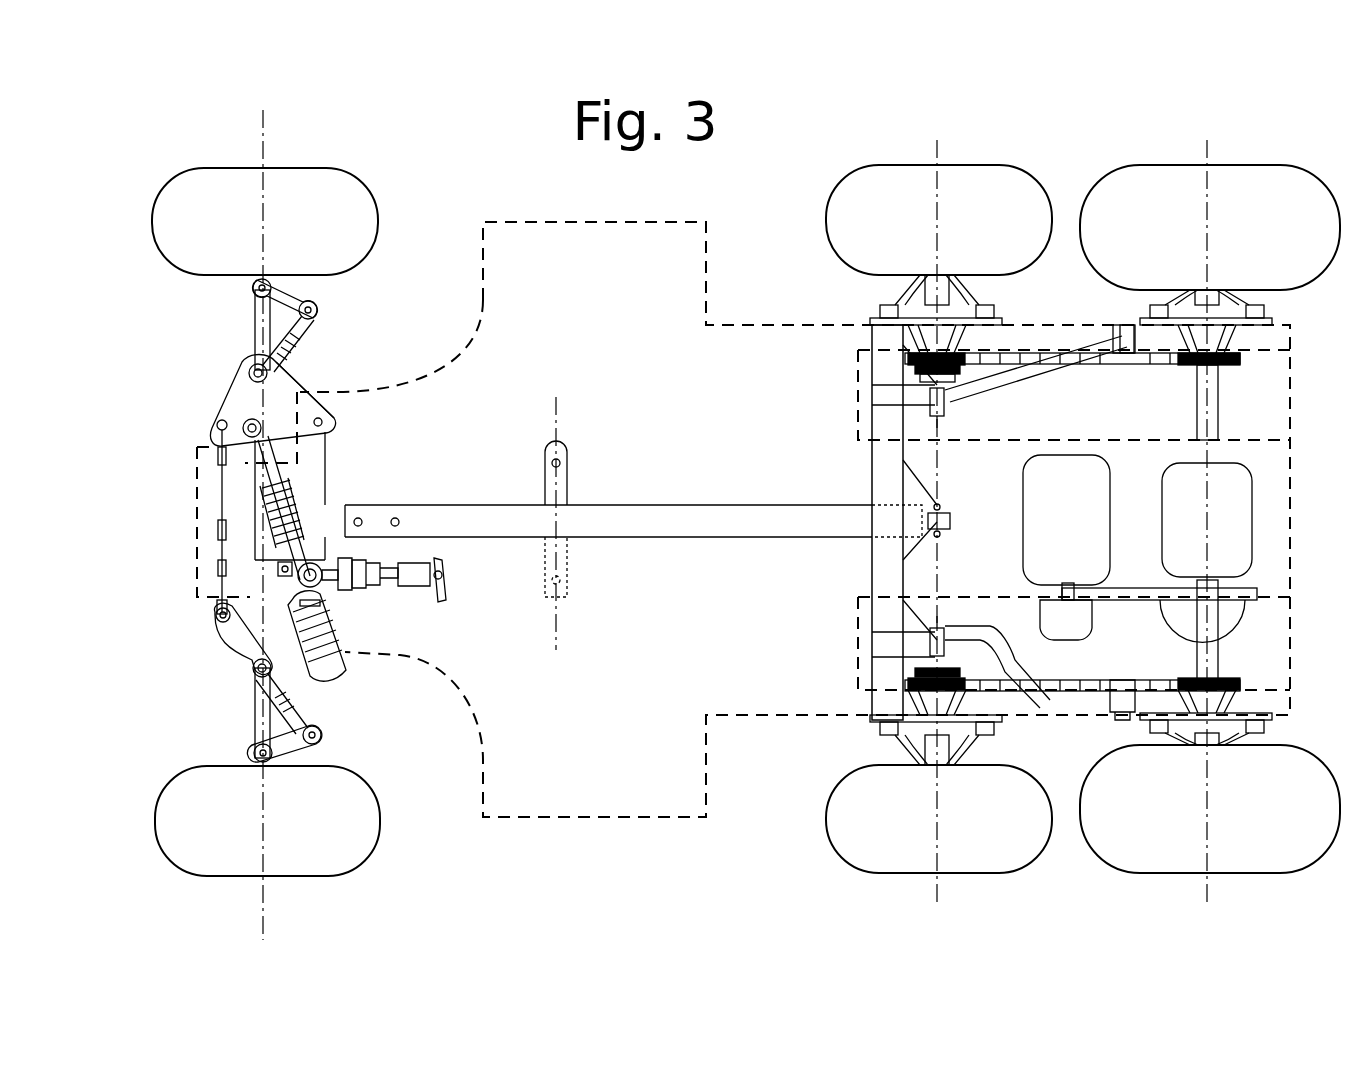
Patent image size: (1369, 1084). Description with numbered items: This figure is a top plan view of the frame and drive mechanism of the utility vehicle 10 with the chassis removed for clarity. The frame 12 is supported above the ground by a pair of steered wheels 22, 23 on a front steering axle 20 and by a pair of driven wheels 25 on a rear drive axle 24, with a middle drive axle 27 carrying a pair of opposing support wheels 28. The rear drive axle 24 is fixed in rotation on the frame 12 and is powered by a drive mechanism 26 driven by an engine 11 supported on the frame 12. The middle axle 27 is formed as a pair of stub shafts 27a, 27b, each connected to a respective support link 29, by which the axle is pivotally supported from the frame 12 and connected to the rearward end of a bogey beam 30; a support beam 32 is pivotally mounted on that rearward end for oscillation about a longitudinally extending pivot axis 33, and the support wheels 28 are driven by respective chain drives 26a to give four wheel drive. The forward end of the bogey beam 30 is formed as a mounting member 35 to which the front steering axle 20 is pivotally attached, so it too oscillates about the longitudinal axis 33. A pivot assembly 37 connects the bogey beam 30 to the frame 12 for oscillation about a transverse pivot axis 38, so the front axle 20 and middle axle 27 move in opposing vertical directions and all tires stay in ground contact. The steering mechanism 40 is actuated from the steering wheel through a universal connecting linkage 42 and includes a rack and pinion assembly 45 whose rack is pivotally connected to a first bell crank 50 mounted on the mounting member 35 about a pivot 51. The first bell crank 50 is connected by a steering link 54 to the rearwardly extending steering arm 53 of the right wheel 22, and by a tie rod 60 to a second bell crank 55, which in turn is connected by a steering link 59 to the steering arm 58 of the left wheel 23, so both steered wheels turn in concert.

The utility vehicle 10 is at (434, 142).
The engine 11 is at (1128, 455).
The frame 12 is at (607, 224).
The front steering axle 20 is at (258, 340).
The right steered wheel 22 is at (218, 168).
The left steered wheel 23 is at (292, 876).
The rear drive axle 24 is at (1218, 385).
The driven wheels 25 is at (1235, 165).
The drive mechanism 26 is at (1215, 650).
The chain drives 26a is at (1020, 352).
The middle drive axle 27 is at (940, 873).
The stub shaft 27a is at (928, 288).
The stub shaft 27b is at (928, 752).
The support wheels 28 is at (920, 165).
The support links 29 is at (1003, 378).
The bogey beam 30 is at (458, 505).
The support beam 32 is at (872, 490).
The longitudinally extending pivot axis 33 is at (945, 533).
The mounting member 35 is at (330, 462).
The pivot assembly 37 is at (568, 455).
The transverse pivot axis 38 is at (568, 622).
The steering mechanism 40 is at (423, 760).
The universal connecting linkage 42 is at (446, 588).
The rack and pinion assembly 45 is at (362, 626).
The first bell crank 50 is at (216, 402).
The pivot 51 is at (332, 420).
The steering arm 53 is at (300, 300).
The steering link 54 is at (310, 330).
The second bell crank 55 is at (228, 662).
The steering arm 58 is at (310, 755).
The steering link 59 is at (335, 638).
The tie rod 60 is at (213, 570).